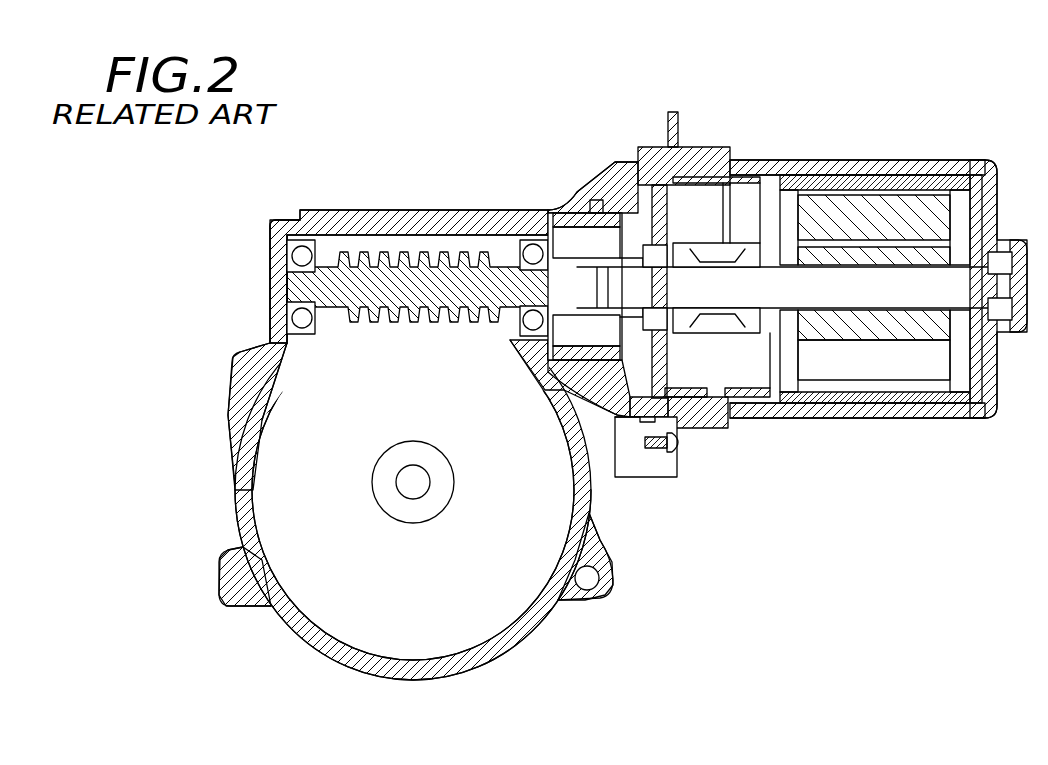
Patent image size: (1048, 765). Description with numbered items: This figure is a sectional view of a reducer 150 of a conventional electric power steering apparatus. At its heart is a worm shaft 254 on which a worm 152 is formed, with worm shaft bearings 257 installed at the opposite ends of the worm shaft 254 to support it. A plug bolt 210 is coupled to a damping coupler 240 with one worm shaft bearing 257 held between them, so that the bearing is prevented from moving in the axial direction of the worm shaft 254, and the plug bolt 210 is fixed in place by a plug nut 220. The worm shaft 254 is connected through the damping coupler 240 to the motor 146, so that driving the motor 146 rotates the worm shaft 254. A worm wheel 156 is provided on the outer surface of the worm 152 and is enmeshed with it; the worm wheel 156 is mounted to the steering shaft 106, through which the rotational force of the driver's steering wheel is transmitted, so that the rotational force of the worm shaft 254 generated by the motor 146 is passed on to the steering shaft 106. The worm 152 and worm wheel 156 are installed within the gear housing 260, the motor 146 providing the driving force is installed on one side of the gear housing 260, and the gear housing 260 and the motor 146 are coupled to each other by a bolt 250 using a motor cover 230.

The motor 150 is at (664, 57).
The motor cover 230 is at (693, 150).
The plug nut 220 is at (597, 200).
The plug bolt 210 is at (583, 208).
The motor 146 is at (822, 160).
The worm shaft bearings 257 is at (302, 246).
The worm 152 is at (355, 250).
The gear housing 260 is at (410, 210).
The worm shaft 254 is at (290, 290).
The bolt 250 is at (684, 446).
The damping coupler 240 is at (618, 418).
The steering shaft 106 is at (413, 487).
The worm wheel 156 is at (487, 620).